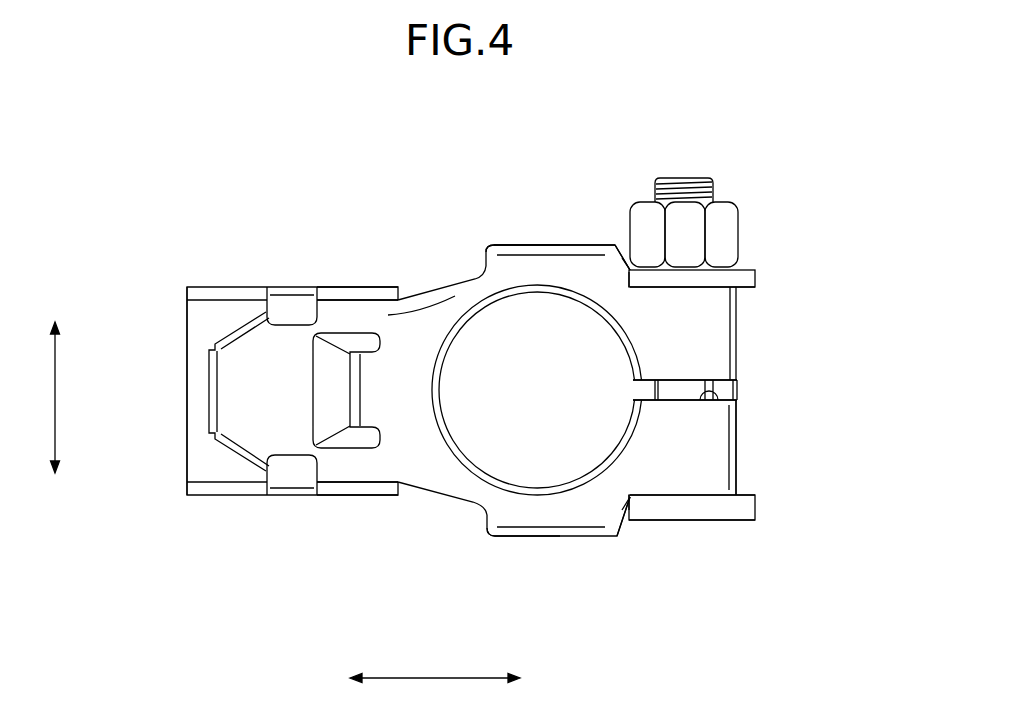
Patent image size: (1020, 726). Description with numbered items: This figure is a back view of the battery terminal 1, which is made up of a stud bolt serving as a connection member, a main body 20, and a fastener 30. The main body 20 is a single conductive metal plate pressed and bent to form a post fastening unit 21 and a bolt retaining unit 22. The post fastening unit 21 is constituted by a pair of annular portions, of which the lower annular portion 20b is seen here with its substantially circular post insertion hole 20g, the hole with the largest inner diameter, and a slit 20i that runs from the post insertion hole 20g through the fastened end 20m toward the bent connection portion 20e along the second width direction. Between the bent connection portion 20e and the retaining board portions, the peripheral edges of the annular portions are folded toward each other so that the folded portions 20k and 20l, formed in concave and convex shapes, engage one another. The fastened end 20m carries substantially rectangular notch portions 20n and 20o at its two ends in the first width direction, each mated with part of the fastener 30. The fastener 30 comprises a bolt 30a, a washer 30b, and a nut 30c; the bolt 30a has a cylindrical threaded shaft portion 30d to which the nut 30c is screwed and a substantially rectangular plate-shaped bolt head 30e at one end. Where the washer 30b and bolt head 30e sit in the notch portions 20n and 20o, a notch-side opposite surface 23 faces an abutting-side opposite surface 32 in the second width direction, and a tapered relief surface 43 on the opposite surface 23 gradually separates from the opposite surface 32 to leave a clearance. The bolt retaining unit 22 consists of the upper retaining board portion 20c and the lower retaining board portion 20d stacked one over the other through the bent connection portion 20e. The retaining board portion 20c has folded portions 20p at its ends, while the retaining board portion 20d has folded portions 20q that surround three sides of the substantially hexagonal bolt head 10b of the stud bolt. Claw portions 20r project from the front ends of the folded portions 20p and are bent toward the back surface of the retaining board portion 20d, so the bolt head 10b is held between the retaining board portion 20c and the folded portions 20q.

The battery terminal 1 is at (250, 142).
The bolt head 10b is at (333, 435).
The main body 20 is at (482, 175).
The annular portion 20b is at (573, 263).
The retaining board portion 20c is at (210, 313).
The retaining board portion 20d is at (440, 305).
The bent connection portion 20e is at (720, 442).
The post insertion hole 20g is at (605, 326).
The slit 20i is at (738, 380).
The folded portion 20k is at (512, 246).
The folded portion 20l is at (538, 250).
The fastened end 20m is at (750, 420).
The notch portion 20n is at (662, 292).
The notch portion 20o is at (706, 496).
The folded portion 20p is at (345, 296).
The folded portion 20q is at (228, 330).
The claw portion 20r is at (298, 308).
The post fastening unit 21 is at (553, 228).
The bolt retaining unit 22 is at (188, 276).
The opposite surface 23 is at (617, 238).
The fastener 30 is at (712, 140).
The bolt 30a is at (737, 537).
The washer 30b is at (748, 262).
The nut 30c is at (695, 226).
The shaft portion 30d is at (716, 390).
The bolt head 30e is at (688, 505).
The opposite surface 32 is at (618, 295).
The relief surface 43 is at (630, 262).